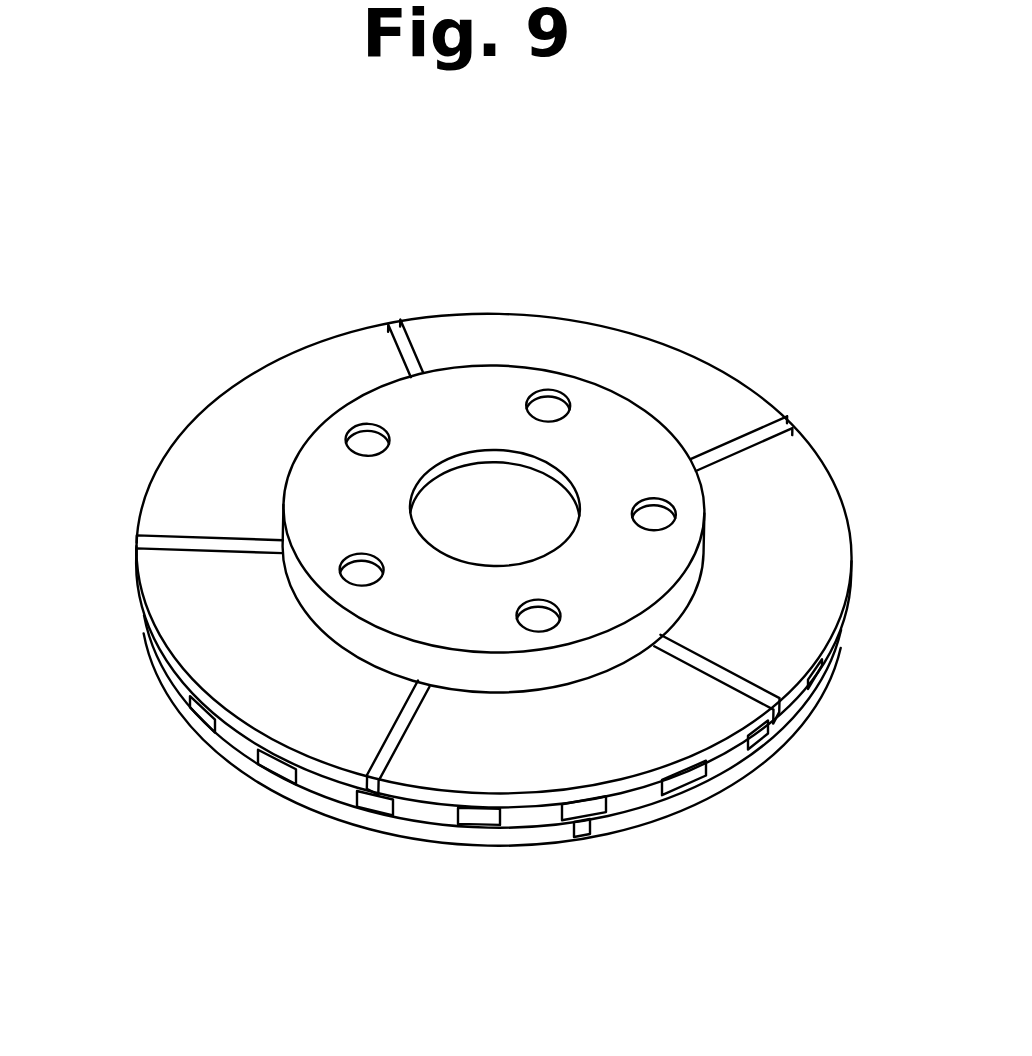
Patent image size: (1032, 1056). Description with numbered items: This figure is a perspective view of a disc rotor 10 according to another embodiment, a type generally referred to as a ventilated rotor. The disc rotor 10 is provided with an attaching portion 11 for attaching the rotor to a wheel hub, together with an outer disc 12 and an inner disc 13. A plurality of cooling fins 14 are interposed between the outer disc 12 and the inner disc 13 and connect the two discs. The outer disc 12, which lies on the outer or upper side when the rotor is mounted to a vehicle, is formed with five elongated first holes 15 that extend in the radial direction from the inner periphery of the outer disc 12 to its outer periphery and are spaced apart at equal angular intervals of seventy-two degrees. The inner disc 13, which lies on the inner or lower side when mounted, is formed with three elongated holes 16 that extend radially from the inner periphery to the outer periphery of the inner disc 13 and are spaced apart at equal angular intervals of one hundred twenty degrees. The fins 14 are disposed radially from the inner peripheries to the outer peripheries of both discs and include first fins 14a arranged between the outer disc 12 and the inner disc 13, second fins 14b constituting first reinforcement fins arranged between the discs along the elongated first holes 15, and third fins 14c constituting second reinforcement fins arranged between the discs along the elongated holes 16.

The disc rotor 10 is at (731, 330).
The attaching portion 11 is at (318, 473).
The outer disc 12 is at (697, 733).
The inner disc 13 is at (156, 664).
The cooling fins 14 is at (600, 940).
The first fins 14a is at (478, 823).
The second fins 14b is at (379, 810).
The third fins 14c is at (582, 825).
The elongated first holes 15 is at (412, 352).
The elongated holes 16 is at (192, 722).